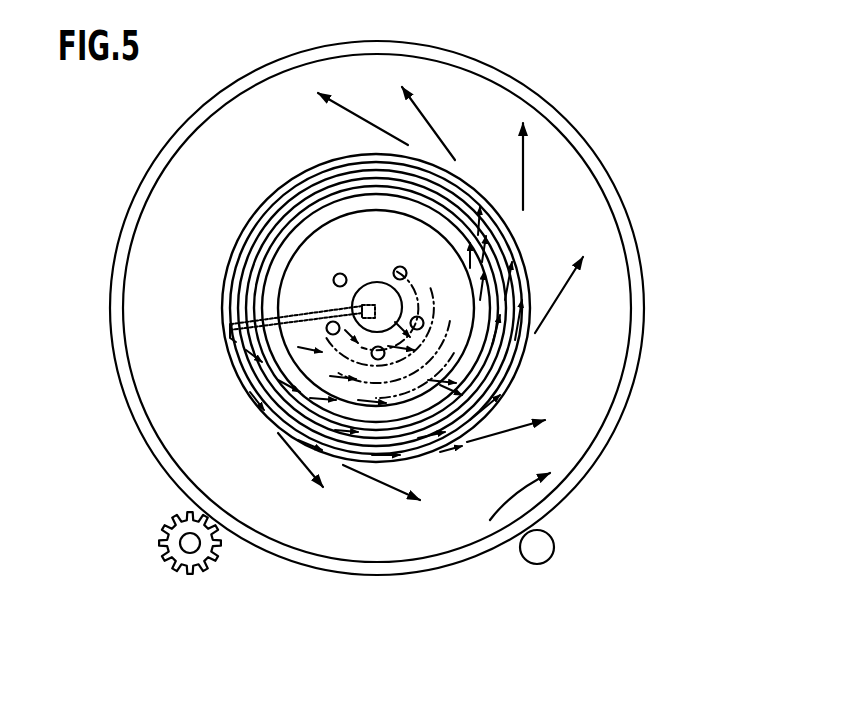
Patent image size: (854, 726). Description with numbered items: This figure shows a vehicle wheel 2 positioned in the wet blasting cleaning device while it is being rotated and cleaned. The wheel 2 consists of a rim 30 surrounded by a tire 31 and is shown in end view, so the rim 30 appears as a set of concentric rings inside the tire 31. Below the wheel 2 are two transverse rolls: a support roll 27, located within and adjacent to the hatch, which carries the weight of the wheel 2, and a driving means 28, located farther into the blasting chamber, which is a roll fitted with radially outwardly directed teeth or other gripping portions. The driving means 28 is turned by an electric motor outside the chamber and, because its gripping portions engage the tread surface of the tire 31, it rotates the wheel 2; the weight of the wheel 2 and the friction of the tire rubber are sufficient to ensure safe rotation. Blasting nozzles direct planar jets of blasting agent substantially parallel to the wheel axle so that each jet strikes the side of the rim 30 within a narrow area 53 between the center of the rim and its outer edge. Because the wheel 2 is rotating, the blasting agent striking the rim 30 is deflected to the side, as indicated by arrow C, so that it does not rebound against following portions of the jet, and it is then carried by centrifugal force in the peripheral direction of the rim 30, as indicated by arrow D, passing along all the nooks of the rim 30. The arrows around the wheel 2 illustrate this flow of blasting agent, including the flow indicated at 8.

The vehicle wheel 2 is at (620, 182).
The tire 31 is at (603, 243).
The rim 30 is at (478, 355).
The narrow area 53 is at (273, 322).
The air flow 8 is at (520, 503).
The transverse support roll 27 is at (521, 562).
The transverse driving means 28 is at (171, 567).
The arrow C is at (228, 349).
The arrow D is at (347, 412).